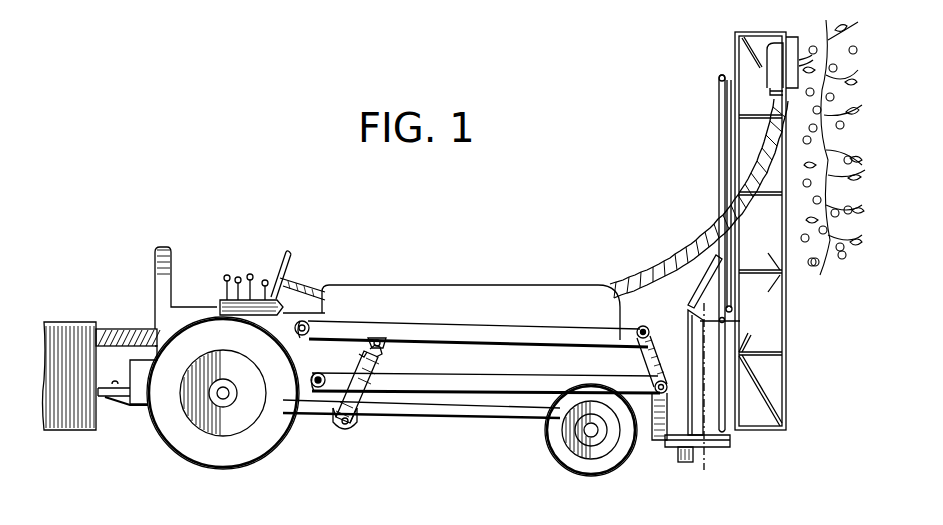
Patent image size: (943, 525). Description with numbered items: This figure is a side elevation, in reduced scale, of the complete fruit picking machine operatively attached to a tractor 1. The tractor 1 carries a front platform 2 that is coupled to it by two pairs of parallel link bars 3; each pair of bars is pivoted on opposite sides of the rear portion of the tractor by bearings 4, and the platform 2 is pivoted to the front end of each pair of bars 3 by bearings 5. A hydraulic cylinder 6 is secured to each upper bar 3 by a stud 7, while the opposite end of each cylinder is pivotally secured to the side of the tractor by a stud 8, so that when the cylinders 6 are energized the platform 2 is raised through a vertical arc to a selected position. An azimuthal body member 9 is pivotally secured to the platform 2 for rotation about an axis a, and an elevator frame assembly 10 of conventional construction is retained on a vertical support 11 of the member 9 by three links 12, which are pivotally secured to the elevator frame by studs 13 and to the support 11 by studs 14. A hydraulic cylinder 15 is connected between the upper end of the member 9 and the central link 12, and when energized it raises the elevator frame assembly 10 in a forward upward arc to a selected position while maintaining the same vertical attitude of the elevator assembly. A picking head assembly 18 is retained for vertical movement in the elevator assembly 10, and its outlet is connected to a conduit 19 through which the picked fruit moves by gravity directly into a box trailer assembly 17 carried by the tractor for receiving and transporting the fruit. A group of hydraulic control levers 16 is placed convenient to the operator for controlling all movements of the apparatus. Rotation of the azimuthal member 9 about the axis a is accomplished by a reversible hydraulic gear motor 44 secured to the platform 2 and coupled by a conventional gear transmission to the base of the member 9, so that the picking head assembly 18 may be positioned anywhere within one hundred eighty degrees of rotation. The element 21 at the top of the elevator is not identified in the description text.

The tractor 1 is at (471, 288).
The front platform 2 is at (662, 448).
The parallel link bars 3 is at (460, 328).
The bearings 4 is at (304, 335).
The bearings 5 is at (664, 380).
The hydraulic cylinder 6 is at (383, 368).
The stud 7 is at (386, 343).
The stud 8 is at (346, 428).
The azimuthal body member 9 is at (692, 333).
The elevator frame assembly 10 is at (826, 158).
The vertical support 11 is at (719, 143).
The links 12 is at (727, 107).
The studs 13 is at (743, 180).
The studs 14 is at (720, 77).
The hydraulic cylinder 15 is at (702, 283).
The hydraulic control levers 16 is at (268, 269).
The box trailer assembly 17 is at (70, 347).
The picking head assembly 18 is at (804, 39).
The conduit 19 is at (135, 330).
The hopper cap 21 is at (782, 28).
The reversible hydraulic gear motor 44 is at (681, 462).
The axis a is at (703, 328).